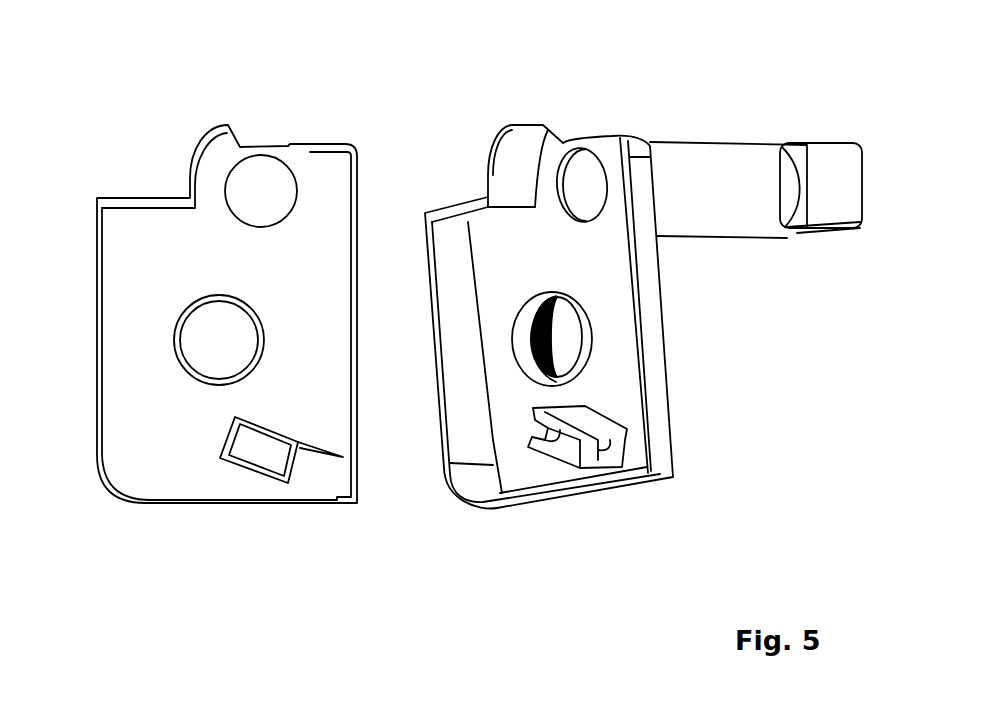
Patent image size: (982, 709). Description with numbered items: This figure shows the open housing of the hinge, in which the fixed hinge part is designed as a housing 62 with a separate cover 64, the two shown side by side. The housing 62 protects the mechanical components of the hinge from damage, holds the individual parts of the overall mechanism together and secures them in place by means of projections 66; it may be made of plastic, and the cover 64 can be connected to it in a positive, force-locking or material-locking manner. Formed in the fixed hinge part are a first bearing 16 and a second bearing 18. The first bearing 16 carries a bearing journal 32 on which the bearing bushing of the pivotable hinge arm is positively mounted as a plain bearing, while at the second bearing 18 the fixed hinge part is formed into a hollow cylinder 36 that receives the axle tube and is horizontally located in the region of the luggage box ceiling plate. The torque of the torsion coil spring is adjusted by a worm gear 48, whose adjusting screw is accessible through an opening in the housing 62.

The first bearing 16 is at (555, 352).
The second bearing 18 is at (568, 192).
The bearing journal 32 is at (585, 333).
The hollow cylinder 36 is at (665, 190).
The worm gear 48 is at (836, 140).
The housing 62 is at (500, 510).
The cover 64 is at (170, 421).
The projections 66 is at (613, 445).